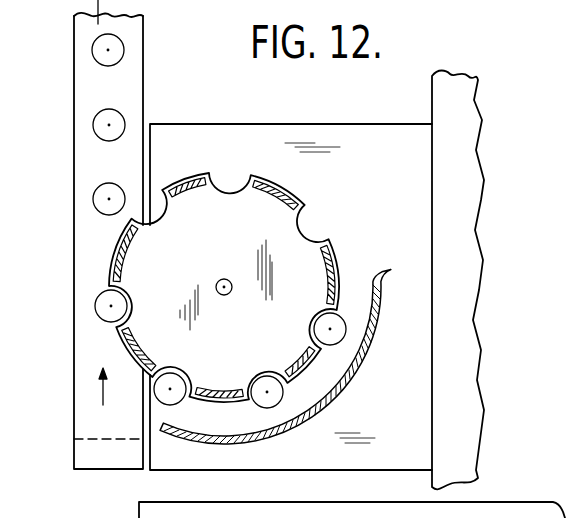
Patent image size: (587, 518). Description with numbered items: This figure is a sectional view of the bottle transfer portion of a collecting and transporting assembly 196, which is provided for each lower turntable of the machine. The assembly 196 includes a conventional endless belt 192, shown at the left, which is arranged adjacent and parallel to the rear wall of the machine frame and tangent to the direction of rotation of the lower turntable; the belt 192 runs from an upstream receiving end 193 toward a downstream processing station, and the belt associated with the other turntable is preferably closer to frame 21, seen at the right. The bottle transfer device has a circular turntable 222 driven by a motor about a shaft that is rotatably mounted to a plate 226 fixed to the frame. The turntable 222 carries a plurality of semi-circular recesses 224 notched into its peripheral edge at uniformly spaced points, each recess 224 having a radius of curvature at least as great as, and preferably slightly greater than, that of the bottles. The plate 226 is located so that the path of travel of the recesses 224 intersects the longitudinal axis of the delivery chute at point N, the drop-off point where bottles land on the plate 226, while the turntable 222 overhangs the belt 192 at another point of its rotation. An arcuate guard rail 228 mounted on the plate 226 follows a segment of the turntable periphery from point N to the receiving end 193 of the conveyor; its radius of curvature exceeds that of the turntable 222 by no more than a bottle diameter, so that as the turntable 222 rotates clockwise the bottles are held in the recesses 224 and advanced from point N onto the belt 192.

The frame 21 is at (478, 198).
The endless belt 192 is at (98, 268).
The receiving end of the conveyor 193 is at (85, 420).
The collecting and transporting assembly 196 is at (360, 228).
The circular turntable 222 is at (315, 355).
The semi-circular recess 224 is at (266, 376).
The plate 226 is at (354, 136).
The guard rail 228 is at (374, 330).
The point N is at (322, 226).